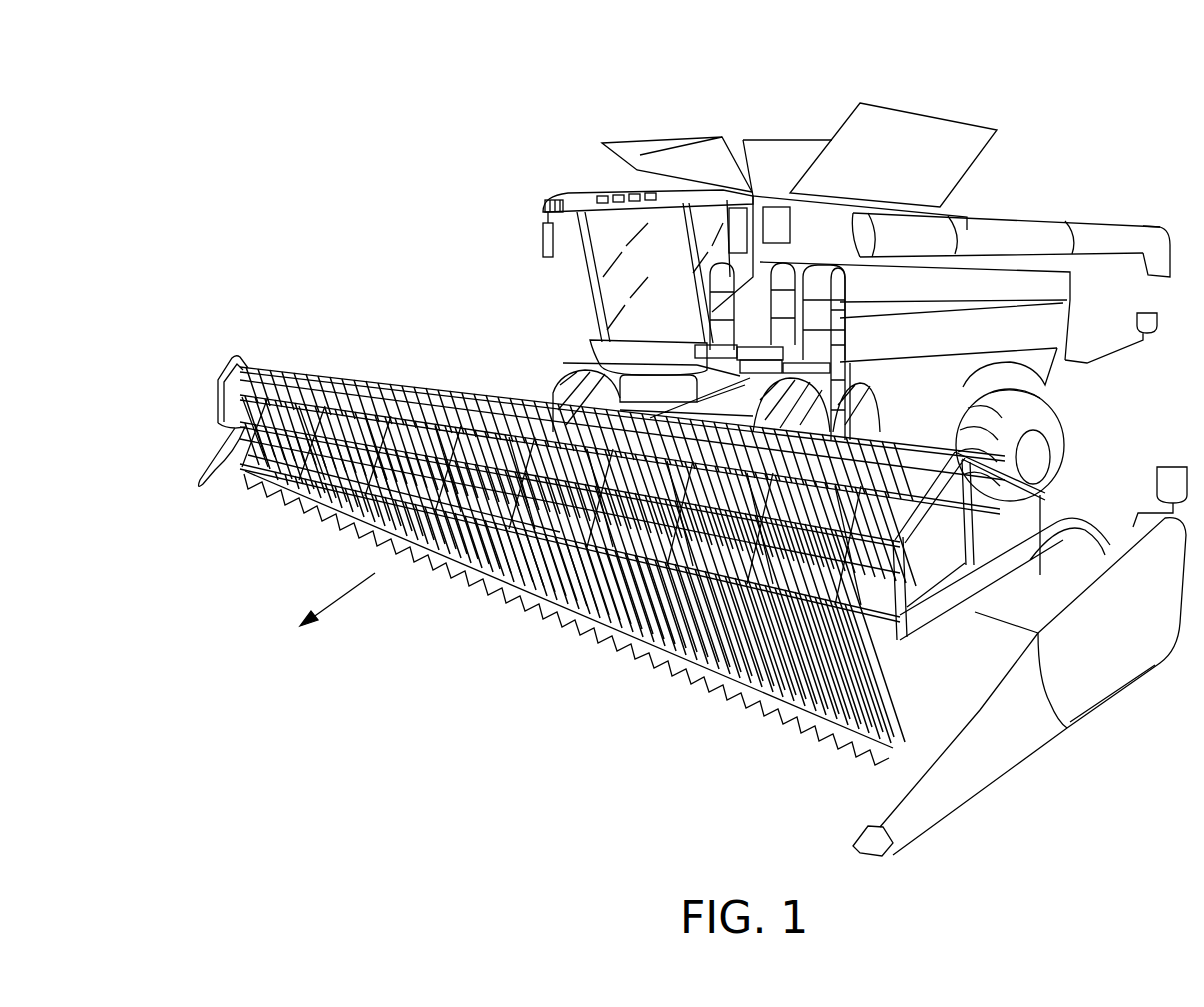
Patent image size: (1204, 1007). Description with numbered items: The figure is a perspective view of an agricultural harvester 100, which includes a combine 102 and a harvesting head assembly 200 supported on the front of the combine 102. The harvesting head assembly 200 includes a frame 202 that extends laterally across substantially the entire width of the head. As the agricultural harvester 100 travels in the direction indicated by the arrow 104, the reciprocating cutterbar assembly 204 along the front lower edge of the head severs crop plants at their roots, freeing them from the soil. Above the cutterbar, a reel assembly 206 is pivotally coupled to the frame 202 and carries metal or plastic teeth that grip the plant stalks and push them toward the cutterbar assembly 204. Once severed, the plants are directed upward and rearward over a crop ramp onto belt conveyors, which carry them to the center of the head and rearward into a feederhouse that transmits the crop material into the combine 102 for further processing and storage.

The agricultural harvester 100 is at (195, 112).
The combine 102 is at (585, 294).
The arrow 104 is at (373, 575).
The harvesting head assembly 200 is at (417, 692).
The frame 202 is at (997, 753).
The reciprocating cutterbar assembly 204 is at (660, 662).
The reel assembly 206 is at (348, 375).